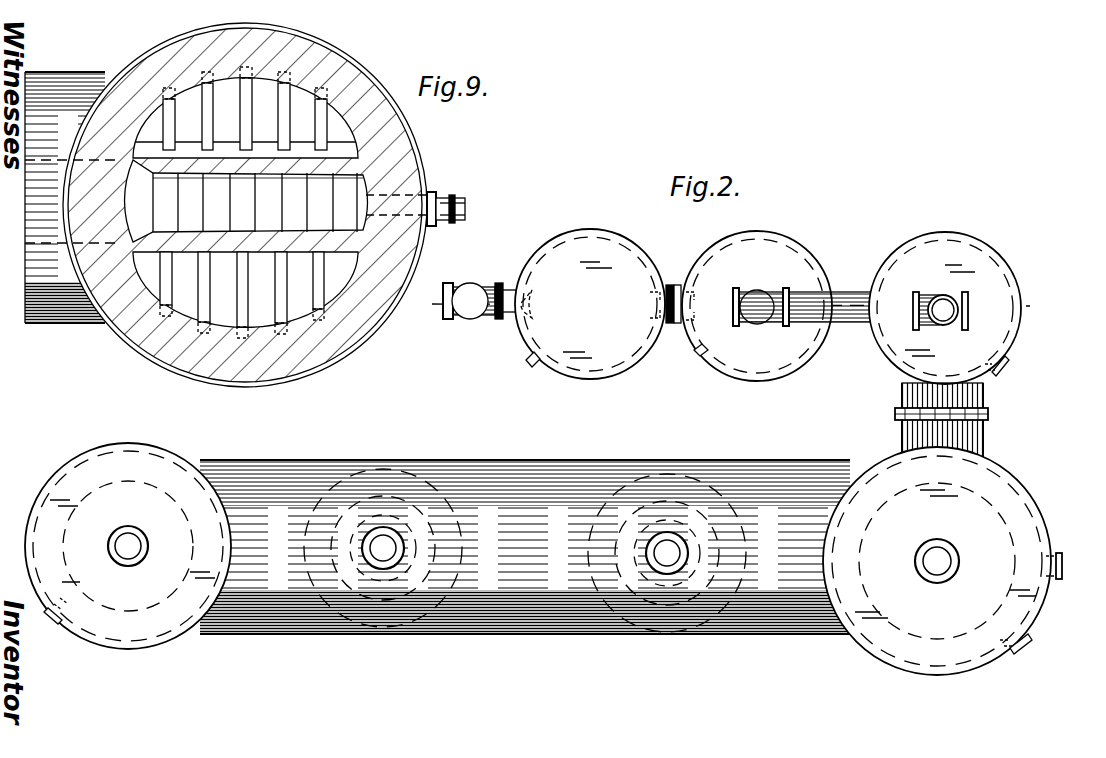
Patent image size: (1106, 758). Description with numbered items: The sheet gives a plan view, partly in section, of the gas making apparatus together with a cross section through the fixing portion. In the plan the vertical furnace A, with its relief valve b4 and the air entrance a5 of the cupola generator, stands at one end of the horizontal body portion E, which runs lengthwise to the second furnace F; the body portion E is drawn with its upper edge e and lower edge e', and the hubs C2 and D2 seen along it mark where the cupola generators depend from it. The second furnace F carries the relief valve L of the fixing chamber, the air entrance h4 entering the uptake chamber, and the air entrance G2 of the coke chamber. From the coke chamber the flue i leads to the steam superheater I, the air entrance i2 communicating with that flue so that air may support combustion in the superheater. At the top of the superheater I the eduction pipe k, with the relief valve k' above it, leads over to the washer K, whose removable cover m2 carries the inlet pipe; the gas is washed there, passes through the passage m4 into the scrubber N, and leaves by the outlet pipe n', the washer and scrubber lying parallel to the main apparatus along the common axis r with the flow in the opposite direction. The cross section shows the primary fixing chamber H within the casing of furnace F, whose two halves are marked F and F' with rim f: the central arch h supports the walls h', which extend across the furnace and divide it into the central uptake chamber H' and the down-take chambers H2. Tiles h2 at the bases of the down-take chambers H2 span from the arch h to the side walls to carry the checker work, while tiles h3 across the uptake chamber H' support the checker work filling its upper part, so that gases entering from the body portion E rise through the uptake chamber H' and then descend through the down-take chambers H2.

In FIG. 9, the second furnace F is at (245, 205).
In FIG. 2, the second furnace F is at (937, 561).
In FIG. 9, the casing half F' is at (393, 339).
In FIG. 9, the horizontal body portion E is at (65, 197).
In FIG. 2, the horizontal body portion E is at (644, 546).
In FIG. 9, the cylinder upper edge e is at (65, 60).
In FIG. 2, the cylinder upper edge e is at (525, 540).
In FIG. 9, the cylinder lower edge e' is at (65, 334).
In FIG. 2, the cylinder lower edge e' is at (525, 647).
In FIG. 9, the casing rim f is at (380, 82).
In FIG. 9, the central arch h is at (233, 205).
In FIG. 9, the walls h' is at (226, 202).
In FIG. 9, the tiles h2 is at (176, 120).
In FIG. 9, the tiles h3 is at (192, 204).
In FIG. 9, the air entrance h4 is at (448, 196).
In FIG. 2, the air entrance h4 is at (1064, 566).
In FIG. 9, the primary fixing chamber H is at (246, 201).
In FIG. 9, the uptake chamber H' is at (217, 204).
In FIG. 9, the down-take chambers H2 is at (245, 203).
In FIG. 2, the scrubber N is at (590, 304).
In FIG. 2, the outlet pipe n' is at (481, 317).
In FIG. 2, the axis line r is at (731, 305).
In FIG. 2, the passage m4 is at (672, 324).
In FIG. 2, the cover m2 is at (750, 288).
In FIG. 2, the washer K is at (757, 306).
In FIG. 2, the eduction pipe k is at (824, 307).
In FIG. 2, the relief valve k' is at (948, 299).
In FIG. 2, the steam superheater I is at (945, 308).
In FIG. 2, the flue i is at (941, 422).
In FIG. 2, the air entrance i2 is at (999, 373).
In FIG. 2, the vertical furnace A is at (128, 546).
In FIG. 2, the relief valve b4 is at (118, 546).
In FIG. 2, the air entrance a5 is at (52, 622).
In FIG. 2, the hub C2 is at (375, 550).
In FIG. 2, the hub D2 is at (655, 552).
In FIG. 2, the relief valve L is at (925, 558).
In FIG. 2, the air entrance G2 is at (1019, 653).